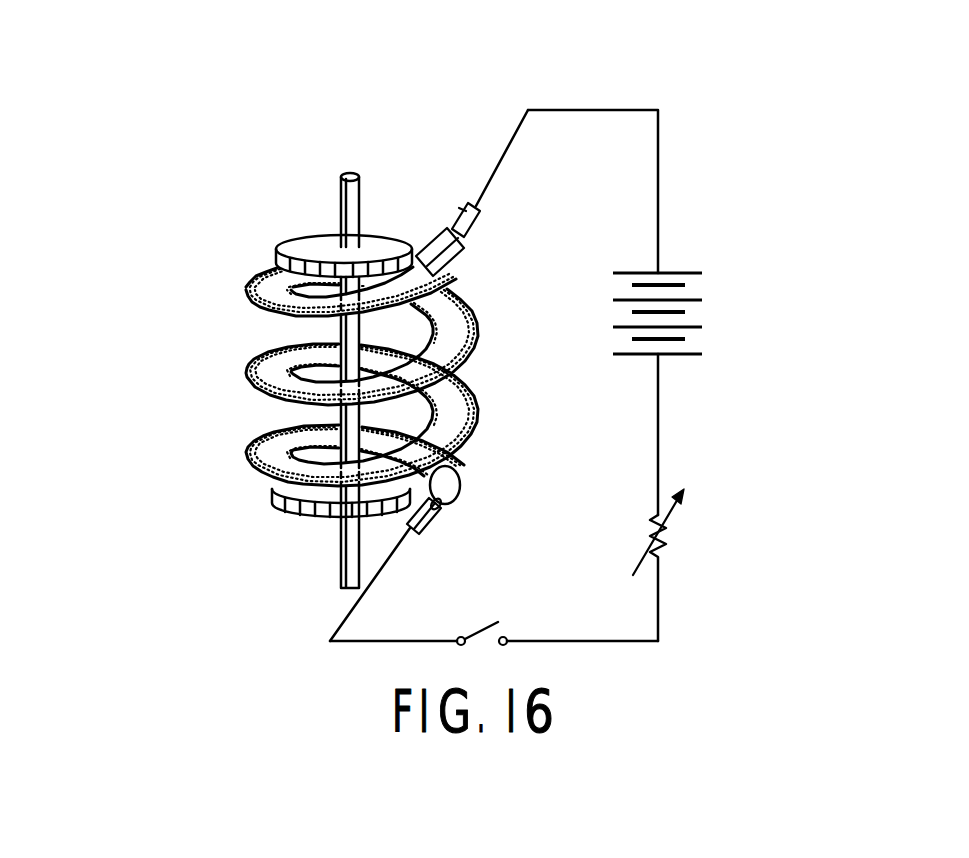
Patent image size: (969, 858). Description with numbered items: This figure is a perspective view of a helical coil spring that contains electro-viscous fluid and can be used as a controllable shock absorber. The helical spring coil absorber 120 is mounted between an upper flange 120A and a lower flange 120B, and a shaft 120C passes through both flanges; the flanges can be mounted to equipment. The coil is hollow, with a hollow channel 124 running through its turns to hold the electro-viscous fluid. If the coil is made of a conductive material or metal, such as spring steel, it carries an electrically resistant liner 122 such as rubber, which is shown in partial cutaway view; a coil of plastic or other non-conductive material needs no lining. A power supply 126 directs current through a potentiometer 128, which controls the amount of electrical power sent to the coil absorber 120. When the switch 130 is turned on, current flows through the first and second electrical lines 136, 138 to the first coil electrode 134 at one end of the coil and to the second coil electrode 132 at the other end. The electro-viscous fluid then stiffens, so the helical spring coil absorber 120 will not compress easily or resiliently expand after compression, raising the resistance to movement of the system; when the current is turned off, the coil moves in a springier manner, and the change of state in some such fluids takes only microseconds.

The helical spring coil absorber 120 is at (262, 288).
The flange 120A is at (318, 247).
The flange 120B is at (276, 498).
The shaft 120C is at (342, 412).
The liner 122 is at (427, 240).
The hollow channel 124 is at (449, 283).
The power supply 126 is at (683, 281).
The potentiometer 128 is at (671, 528).
The switch 130 is at (458, 636).
The second coil electrode 132 is at (427, 523).
The first coil electrode 134 is at (478, 203).
The first electrical line 136 is at (600, 110).
The second electrical line 138 is at (603, 641).